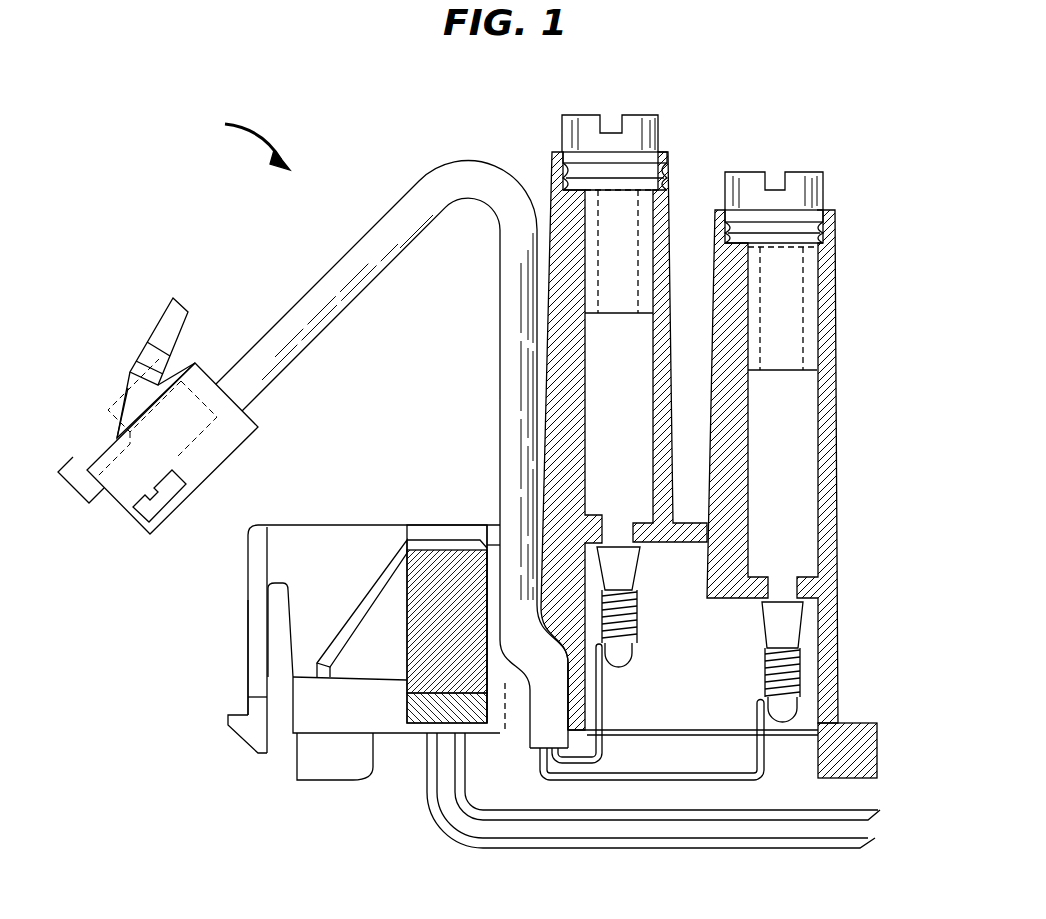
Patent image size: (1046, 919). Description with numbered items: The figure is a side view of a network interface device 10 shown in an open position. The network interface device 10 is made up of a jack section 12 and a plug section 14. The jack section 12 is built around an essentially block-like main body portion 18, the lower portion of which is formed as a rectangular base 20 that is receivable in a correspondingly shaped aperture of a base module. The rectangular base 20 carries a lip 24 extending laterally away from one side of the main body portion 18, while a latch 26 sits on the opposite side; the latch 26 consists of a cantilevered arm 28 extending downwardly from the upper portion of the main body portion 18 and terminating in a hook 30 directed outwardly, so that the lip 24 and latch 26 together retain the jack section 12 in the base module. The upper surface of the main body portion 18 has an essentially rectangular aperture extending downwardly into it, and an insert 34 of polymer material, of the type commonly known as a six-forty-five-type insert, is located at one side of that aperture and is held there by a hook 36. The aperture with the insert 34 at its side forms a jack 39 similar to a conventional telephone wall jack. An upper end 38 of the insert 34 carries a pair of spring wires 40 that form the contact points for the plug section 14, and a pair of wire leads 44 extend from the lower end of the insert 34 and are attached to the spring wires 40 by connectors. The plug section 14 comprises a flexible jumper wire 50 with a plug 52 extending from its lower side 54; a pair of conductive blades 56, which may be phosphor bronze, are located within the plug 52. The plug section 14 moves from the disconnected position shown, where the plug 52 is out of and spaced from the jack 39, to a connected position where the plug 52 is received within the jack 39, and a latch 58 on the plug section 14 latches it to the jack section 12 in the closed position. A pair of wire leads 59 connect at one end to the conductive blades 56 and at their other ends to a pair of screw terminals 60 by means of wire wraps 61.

The network interface device 10 is at (240, 141).
The jack section 12 is at (340, 525).
The plug section 14 is at (293, 360).
The main body portion 18 is at (703, 692).
The rectangular base 20 is at (838, 692).
The lip 24 is at (877, 755).
The latch 26 is at (254, 657).
The cantilevered arm 28 is at (254, 593).
The hook 30 is at (240, 730).
The insert 34 is at (430, 680).
The hook 36 is at (505, 730).
The upper end 38 is at (468, 545).
The jack 39 is at (331, 590).
The spring wires 40 is at (357, 607).
The wire leads 44 is at (490, 845).
The flexible jumper wire 50 is at (330, 272).
The plug 52 is at (87, 447).
The lower side 54 is at (150, 534).
The conductive blades 56 is at (160, 500).
The latch 58 is at (177, 305).
The wire leads 59 is at (623, 777).
The screw terminals 60 is at (652, 168).
The wire wraps 61 is at (637, 627).